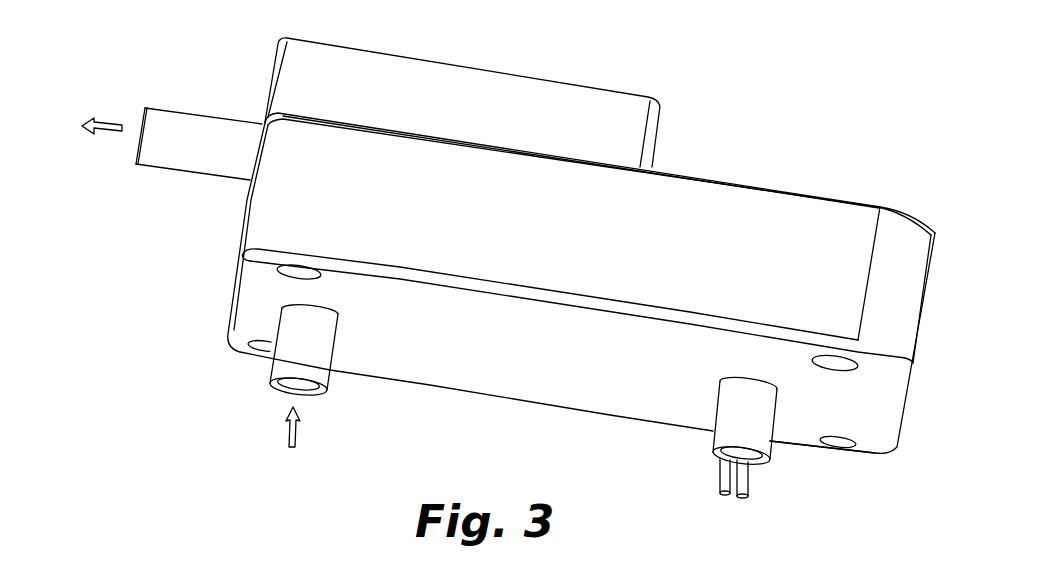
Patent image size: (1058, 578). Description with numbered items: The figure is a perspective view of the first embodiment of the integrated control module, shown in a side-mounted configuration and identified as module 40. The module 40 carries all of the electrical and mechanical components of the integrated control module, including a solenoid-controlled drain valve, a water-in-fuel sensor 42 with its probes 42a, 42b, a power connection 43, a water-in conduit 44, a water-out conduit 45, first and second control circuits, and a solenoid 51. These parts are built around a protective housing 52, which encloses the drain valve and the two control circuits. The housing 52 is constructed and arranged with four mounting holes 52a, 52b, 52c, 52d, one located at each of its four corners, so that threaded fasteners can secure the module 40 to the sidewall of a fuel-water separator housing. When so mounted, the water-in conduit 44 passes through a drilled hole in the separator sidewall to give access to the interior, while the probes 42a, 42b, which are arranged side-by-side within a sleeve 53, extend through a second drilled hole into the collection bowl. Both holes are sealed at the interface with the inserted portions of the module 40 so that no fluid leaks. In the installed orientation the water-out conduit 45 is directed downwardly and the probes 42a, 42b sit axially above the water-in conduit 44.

The module 40 is at (752, 140).
The power connection 43 is at (866, 183).
The solenoid 51 is at (478, 67).
The water-out conduit 45 is at (198, 145).
The water-in conduit 44 is at (320, 345).
The protective housing 52 is at (507, 235).
The mounting hole 52a is at (297, 274).
The mounting hole 52b is at (262, 352).
The mounting hole 52c is at (838, 448).
The mounting hole 52d is at (834, 365).
The water-in-fuel sensor 42 is at (745, 453).
The sleeve 53 is at (727, 425).
The probe 42a is at (720, 485).
The probe 42b is at (748, 495).